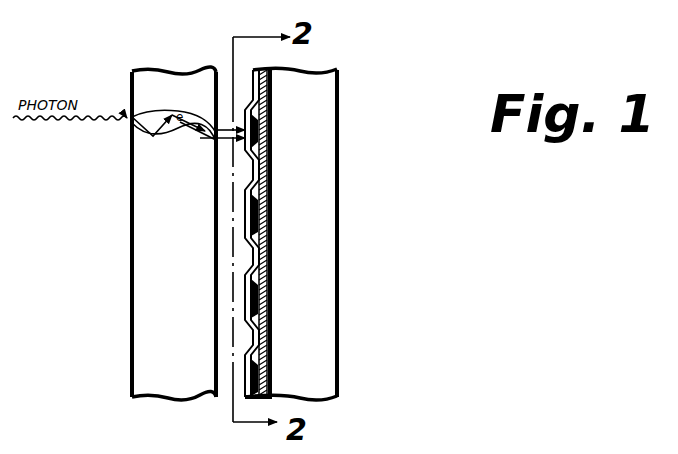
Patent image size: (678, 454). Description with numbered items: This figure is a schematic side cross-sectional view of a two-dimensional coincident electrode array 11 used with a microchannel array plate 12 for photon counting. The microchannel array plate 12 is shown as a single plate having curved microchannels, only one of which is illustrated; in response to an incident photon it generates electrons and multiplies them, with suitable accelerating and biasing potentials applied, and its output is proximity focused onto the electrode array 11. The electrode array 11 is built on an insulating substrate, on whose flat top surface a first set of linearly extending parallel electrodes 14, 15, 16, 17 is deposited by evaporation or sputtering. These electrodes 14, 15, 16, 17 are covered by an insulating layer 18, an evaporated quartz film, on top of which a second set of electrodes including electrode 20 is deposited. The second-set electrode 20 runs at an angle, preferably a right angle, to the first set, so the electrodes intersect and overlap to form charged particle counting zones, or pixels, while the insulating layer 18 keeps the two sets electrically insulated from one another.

The two-dimensional electrode array 11 is at (339, 64).
The microchannel array plate 12 is at (160, 70).
The first set electrode 14 is at (270, 131).
The first set electrode 15 is at (270, 219).
The first set electrode 16 is at (270, 298).
The first set electrode 17 is at (270, 378).
The insulating layer 18 is at (250, 390).
The second set electrode 20 is at (240, 70).